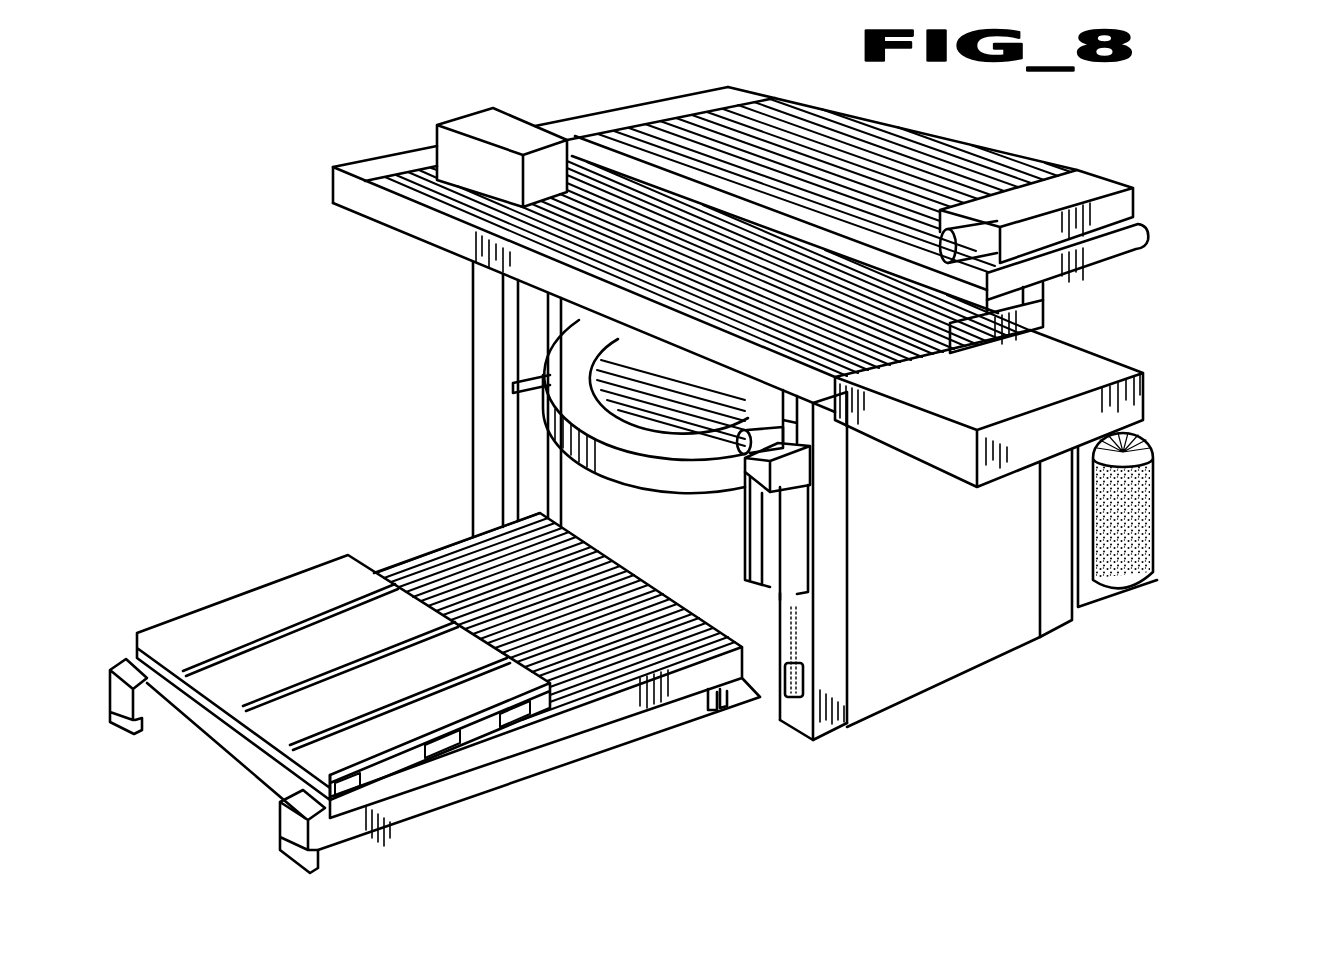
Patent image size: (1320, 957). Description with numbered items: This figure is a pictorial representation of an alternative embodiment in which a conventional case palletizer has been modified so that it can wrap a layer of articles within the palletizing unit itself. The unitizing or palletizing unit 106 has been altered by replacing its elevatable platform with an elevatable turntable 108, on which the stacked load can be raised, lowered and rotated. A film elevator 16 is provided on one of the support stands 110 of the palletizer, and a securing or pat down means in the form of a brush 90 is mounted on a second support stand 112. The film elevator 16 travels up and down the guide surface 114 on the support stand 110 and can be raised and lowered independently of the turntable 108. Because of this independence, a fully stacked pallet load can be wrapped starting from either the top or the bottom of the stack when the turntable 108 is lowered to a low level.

The film elevator 16 is at (822, 474).
The brush 90 is at (1172, 493).
The palletizing unit 106 is at (1167, 225).
The elevatable turntable 108 is at (603, 473).
The support stand 110 is at (828, 728).
The second support stand 112 is at (1052, 623).
The guide surface 114 is at (803, 627).